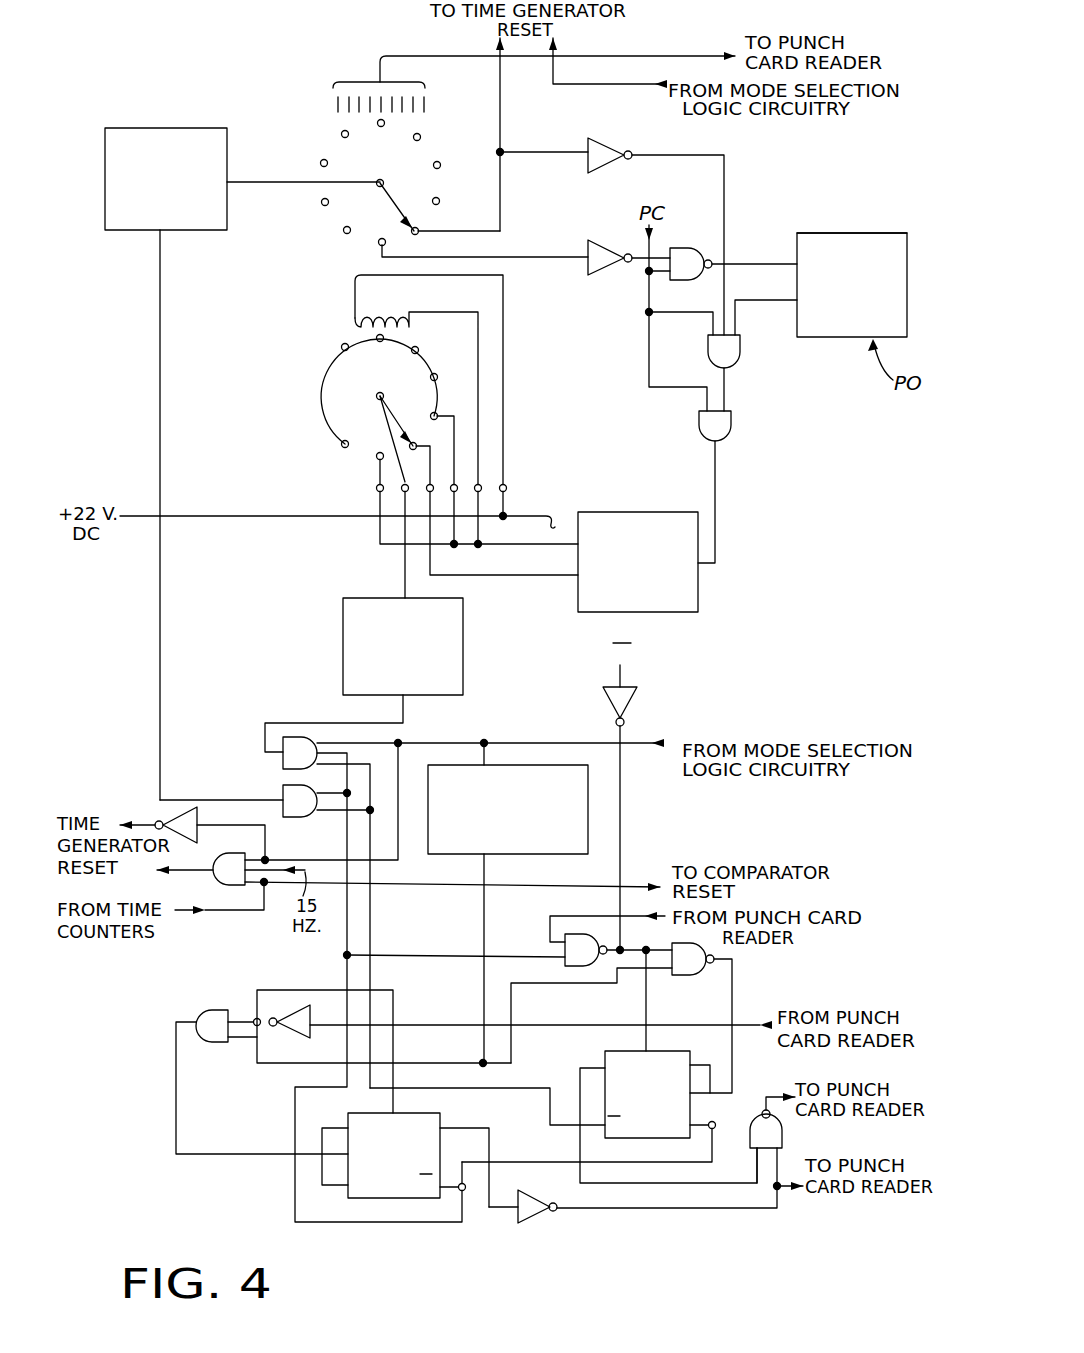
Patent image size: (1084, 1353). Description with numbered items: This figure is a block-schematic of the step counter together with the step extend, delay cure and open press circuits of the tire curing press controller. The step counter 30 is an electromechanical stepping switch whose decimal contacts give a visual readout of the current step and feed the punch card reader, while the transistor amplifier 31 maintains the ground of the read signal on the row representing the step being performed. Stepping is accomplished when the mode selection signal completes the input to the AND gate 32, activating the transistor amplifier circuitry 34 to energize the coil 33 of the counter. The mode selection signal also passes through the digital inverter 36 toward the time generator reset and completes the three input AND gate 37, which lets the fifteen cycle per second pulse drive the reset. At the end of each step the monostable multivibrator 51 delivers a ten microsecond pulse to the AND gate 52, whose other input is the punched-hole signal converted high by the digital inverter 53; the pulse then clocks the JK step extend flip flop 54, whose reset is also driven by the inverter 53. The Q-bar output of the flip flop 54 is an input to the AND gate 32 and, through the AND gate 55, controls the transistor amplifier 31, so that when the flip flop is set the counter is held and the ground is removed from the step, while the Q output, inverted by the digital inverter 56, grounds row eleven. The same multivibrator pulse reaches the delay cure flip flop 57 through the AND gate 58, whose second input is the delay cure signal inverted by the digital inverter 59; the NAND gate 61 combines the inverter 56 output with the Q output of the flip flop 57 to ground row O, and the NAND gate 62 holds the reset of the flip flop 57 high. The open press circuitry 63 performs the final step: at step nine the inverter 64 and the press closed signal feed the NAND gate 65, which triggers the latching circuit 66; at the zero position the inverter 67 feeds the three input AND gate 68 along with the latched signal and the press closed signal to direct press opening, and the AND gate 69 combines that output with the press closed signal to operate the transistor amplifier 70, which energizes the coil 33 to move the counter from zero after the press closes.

The step counter 30 is at (541, 300).
The transistor amplifier 31 is at (140, 128).
The AND gate 32 is at (298, 737).
The coil 33 is at (374, 316).
The transistor amplifier circuitry 34 is at (343, 657).
The digital inverter 36 is at (181, 807).
The three input AND gate 37 is at (230, 886).
The monostable multivibrator 51 is at (557, 854).
The AND gate 52 is at (210, 1010).
The digital inverter 53 is at (296, 1005).
The JK step extend flip flop 54 is at (395, 1199).
The AND gate 55 is at (300, 818).
The digital inverter 56 is at (530, 1220).
The delay cure flip flop 57 is at (578, 1077).
The AND gate 58 is at (690, 976).
The digital inverter 59 is at (637, 698).
The NAND gate 61 is at (783, 1136).
The NAND gate 62 is at (565, 948).
The open press circuitry 63 is at (827, 221).
The inverter 64 is at (592, 241).
The NAND gate 65 is at (682, 247).
The latching circuit 66 is at (883, 233).
The inverter 67 is at (612, 141).
The three input AND gate 68 is at (741, 358).
The AND gate 69 is at (733, 428).
The transistor amplifier 70 is at (590, 613).